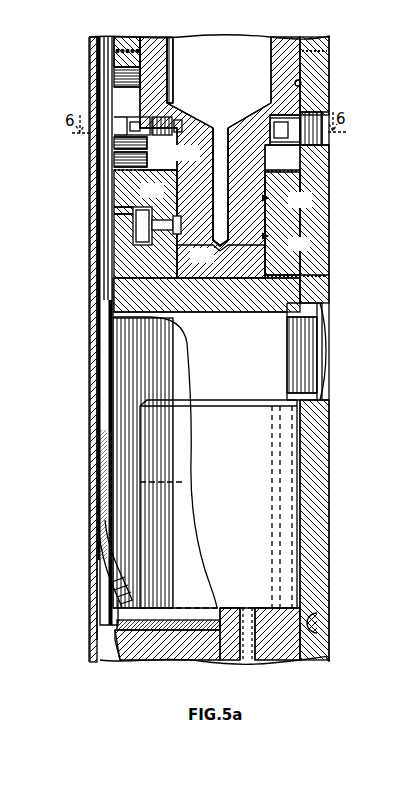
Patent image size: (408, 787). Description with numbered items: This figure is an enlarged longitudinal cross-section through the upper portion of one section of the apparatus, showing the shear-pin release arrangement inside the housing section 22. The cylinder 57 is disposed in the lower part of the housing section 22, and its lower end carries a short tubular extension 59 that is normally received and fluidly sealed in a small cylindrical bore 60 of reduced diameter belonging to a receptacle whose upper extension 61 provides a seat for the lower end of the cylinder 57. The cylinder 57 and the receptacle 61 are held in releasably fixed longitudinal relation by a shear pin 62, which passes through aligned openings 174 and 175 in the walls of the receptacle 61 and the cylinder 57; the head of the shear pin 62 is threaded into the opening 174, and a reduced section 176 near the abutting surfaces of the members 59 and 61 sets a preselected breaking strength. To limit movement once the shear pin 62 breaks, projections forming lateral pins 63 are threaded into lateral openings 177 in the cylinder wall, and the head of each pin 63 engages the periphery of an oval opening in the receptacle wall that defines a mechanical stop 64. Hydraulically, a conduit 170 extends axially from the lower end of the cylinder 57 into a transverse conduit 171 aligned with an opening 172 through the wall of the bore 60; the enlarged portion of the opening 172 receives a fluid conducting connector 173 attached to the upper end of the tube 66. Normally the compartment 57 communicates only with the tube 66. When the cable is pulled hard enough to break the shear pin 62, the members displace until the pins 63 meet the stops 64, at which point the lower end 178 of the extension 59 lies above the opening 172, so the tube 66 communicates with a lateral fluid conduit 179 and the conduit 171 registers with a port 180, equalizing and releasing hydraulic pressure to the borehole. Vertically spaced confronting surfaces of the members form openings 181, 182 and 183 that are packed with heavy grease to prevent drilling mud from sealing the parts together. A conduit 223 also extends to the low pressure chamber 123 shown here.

The housing section 22 is at (86, 47).
The cylinder 57 is at (268, 57).
The tubular extension 59 is at (250, 197).
The cylindrical bore 60 is at (263, 234).
The receptacle upper extension 61 is at (301, 80).
The shear pin 62 is at (310, 143).
The lateral pin 63 is at (128, 120).
The mechanical stop 64 is at (140, 68).
The tube 66 is at (113, 221).
The low pressure chamber 123 is at (182, 482).
The conduit 170 is at (213, 146).
The transverse conduit 171 is at (205, 225).
The opening 172 is at (190, 240).
The fluid conducting connector 173 is at (114, 209).
The opening 174 is at (301, 116).
The opening 175 is at (285, 122).
The reduced section 176 is at (326, 168).
The lateral opening 177 is at (143, 117).
The lower end 178 is at (228, 292).
The fluid conduit 179 is at (330, 276).
The port 180 is at (140, 166).
The opening 181 is at (130, 50).
The opening 182 is at (120, 151).
The opening 183 is at (193, 316).
The conduit 223 is at (252, 618).